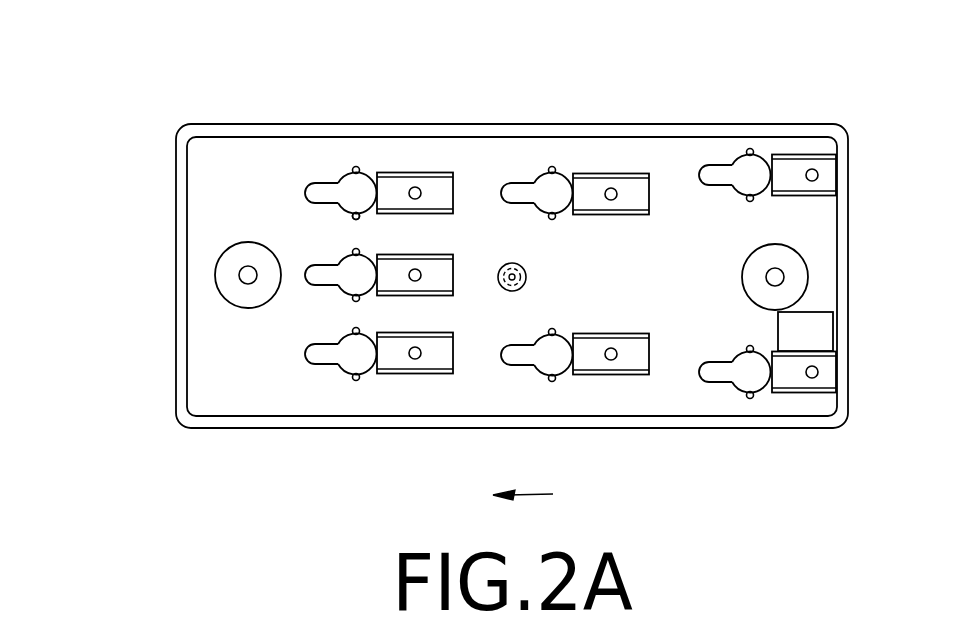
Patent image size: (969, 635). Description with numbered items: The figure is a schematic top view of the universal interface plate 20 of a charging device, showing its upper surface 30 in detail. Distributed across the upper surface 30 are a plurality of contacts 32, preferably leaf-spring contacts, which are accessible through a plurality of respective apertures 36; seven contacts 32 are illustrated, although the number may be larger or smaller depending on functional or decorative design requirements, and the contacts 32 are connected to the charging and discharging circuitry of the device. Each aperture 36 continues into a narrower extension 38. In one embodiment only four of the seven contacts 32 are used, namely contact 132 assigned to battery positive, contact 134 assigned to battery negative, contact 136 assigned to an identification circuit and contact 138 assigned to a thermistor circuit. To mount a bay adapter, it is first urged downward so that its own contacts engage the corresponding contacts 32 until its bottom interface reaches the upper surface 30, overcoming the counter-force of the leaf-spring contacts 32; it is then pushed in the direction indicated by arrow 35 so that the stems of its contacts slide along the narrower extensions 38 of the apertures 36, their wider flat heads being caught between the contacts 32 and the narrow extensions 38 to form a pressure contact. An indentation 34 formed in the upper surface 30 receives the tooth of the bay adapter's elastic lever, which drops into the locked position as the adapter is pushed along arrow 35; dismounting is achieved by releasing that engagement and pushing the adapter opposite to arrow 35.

The universal interface plate 20 is at (142, 83).
The upper surface 30 is at (202, 193).
The contacts 32 is at (363, 175).
The indentation 34 is at (818, 333).
The arrow 35 is at (545, 487).
The apertures 36 is at (363, 213).
The narrower extensions 38 is at (322, 205).
The contact 132 is at (752, 388).
The contact 134 is at (763, 167).
The contact 136 is at (360, 367).
The contact 138 is at (352, 287).